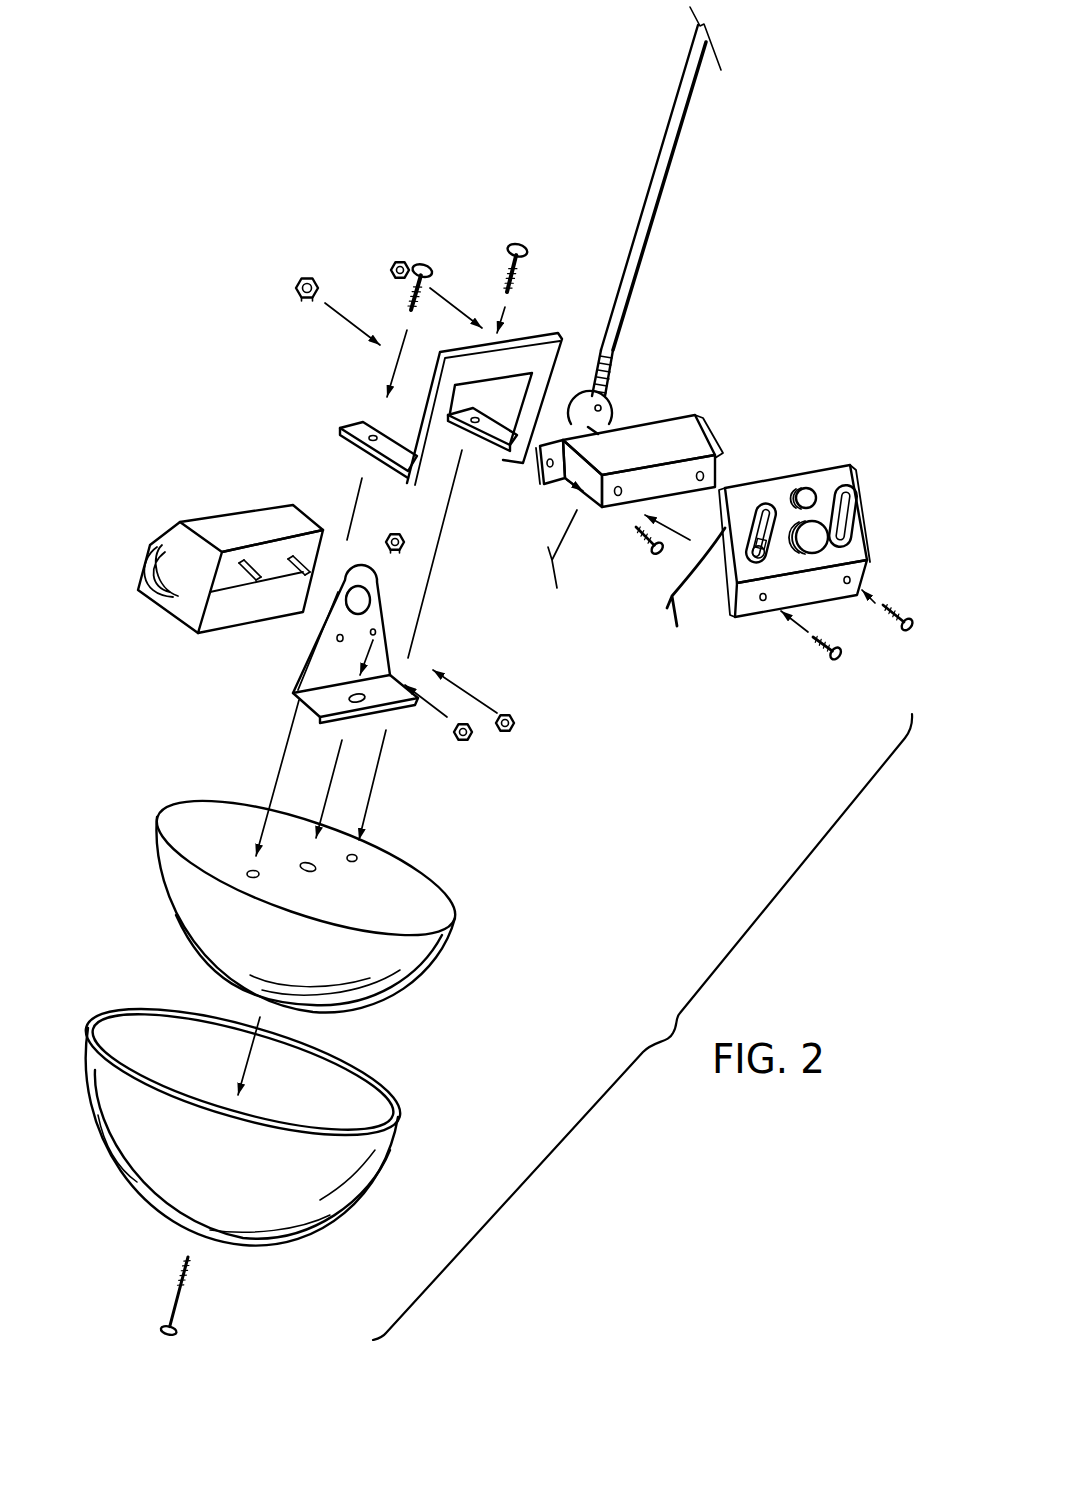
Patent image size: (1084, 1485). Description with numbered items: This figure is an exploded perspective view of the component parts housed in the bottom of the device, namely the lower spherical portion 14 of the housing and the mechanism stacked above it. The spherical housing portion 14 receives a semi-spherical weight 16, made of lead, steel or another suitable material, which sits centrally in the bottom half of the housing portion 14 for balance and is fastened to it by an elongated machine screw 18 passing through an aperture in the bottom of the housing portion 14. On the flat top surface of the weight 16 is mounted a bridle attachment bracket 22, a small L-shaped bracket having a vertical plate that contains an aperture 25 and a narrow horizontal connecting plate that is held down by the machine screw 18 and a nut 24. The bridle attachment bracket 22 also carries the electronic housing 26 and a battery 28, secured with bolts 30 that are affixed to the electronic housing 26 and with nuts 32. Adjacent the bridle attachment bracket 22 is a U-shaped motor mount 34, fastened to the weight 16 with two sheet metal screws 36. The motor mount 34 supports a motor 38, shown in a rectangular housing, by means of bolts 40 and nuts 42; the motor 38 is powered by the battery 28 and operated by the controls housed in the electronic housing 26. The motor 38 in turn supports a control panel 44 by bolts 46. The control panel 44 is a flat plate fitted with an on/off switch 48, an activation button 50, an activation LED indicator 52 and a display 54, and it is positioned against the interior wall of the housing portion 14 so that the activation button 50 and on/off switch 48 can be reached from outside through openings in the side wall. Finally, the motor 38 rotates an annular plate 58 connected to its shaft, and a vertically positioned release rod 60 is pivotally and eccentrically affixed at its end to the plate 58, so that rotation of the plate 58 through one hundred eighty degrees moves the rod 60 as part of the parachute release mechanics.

The lower spherical portion 14 is at (398, 1117).
The semi-spherical weight 16 is at (403, 947).
The elongated machine screw 18 is at (186, 1300).
The bridle attachment bracket 22 is at (330, 677).
The nut 24 is at (405, 545).
The aperture 25 is at (366, 601).
The electronic housing 26 is at (193, 553).
The battery 28 is at (180, 610).
The bolts 30 is at (292, 559).
The nuts 32 is at (473, 740).
The U-shaped motor mount 34 is at (423, 447).
The sheet metal screws 36 is at (437, 255).
The motor 38 is at (657, 433).
The bolts 40 is at (638, 527).
The nuts 42 is at (395, 257).
The control panel 44 is at (752, 486).
The bolts 46 is at (905, 633).
The on/off switch 48 is at (767, 550).
The activation button 50 is at (810, 538).
The activation LED indicator 52 is at (807, 492).
The display 54 is at (849, 482).
The annular plate 58 is at (587, 402).
The release rod 60 is at (672, 138).